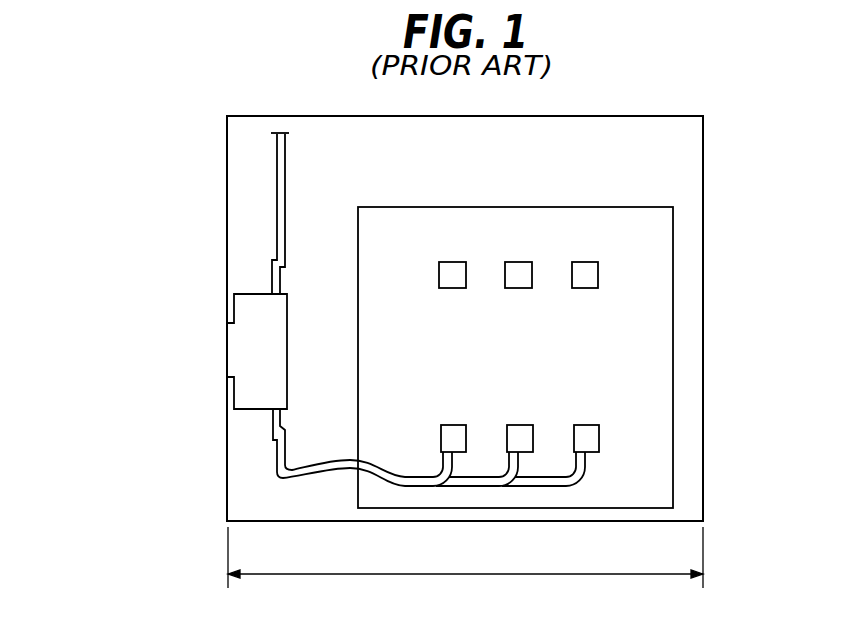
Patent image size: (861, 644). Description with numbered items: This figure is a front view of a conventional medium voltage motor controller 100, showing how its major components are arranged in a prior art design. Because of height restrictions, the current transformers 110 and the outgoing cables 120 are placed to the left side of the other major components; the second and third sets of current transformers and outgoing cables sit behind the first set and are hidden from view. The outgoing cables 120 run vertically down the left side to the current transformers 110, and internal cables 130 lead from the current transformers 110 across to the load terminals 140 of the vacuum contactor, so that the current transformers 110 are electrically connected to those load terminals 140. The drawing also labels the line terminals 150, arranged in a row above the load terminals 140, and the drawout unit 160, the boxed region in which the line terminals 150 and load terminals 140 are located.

The medium voltage motor controller 100 is at (760, 498).
The current transformers 110 is at (258, 347).
The outgoing cables 120 is at (276, 176).
The internal cables 130 is at (276, 475).
The load terminals 140 is at (591, 428).
The line terminals 150 is at (578, 267).
The drawout unit 160 is at (673, 257).